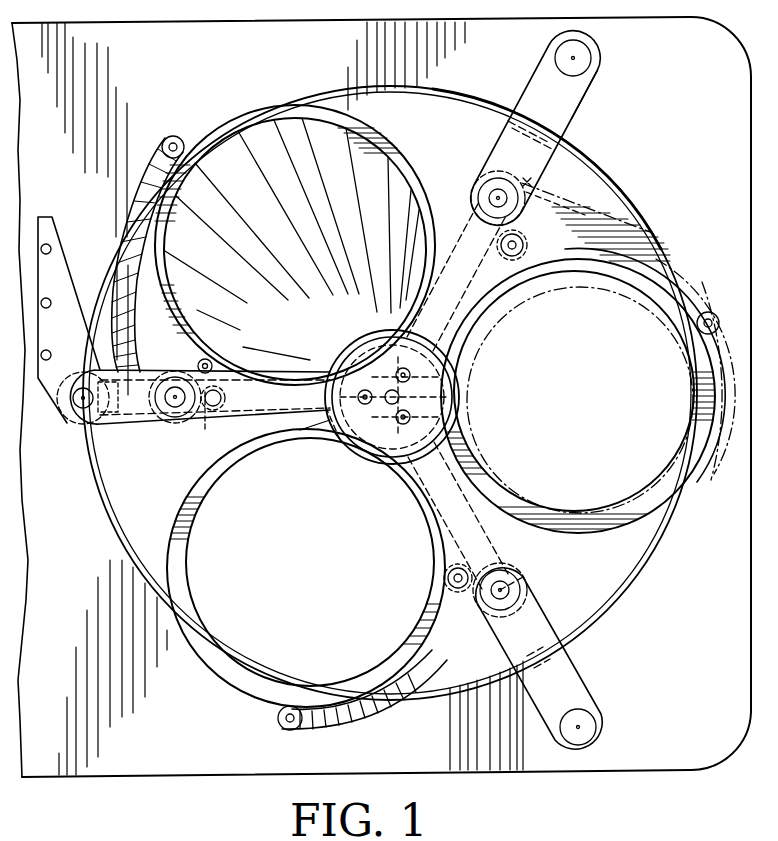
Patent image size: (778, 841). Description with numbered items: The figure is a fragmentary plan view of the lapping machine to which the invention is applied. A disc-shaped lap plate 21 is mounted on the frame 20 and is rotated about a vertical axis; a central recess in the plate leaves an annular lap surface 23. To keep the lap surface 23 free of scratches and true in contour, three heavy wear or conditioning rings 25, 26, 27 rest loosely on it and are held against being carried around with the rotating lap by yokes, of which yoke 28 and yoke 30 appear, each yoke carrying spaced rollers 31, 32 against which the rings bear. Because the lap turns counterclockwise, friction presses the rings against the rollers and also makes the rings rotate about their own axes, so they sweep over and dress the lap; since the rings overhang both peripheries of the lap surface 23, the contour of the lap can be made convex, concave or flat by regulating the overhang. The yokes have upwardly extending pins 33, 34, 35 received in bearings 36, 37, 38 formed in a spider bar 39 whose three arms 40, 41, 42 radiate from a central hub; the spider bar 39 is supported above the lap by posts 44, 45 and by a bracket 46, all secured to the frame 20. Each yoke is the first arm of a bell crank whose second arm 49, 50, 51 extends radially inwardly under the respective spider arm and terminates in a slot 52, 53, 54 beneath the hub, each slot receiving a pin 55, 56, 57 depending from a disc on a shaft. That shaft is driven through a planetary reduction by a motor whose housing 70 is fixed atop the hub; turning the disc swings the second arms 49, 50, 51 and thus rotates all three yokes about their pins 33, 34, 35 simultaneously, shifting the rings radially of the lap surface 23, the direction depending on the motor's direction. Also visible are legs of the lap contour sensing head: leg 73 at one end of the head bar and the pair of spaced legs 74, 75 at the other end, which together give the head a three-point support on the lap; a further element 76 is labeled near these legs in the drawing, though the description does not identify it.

The frame 20 is at (690, 778).
The lap plate 21 is at (651, 555).
The lap surface 23 is at (128, 513).
The ring 25 is at (266, 108).
The ring 26 is at (702, 458).
The ring 27 is at (220, 664).
The yoke 28 is at (158, 188).
The yoke 30 is at (412, 690).
The roller 31 is at (178, 136).
The roller 32 is at (516, 236).
The pin 33 is at (168, 418).
The pin 34 is at (494, 190).
The pin 35 is at (520, 584).
The bearing 36 is at (208, 410).
The bearing 37 is at (545, 184).
The bearing 38 is at (528, 592).
The spider bar 39 is at (604, 123).
The arm 40 is at (100, 430).
The arm 41 is at (535, 98).
The arm 42 is at (578, 680).
The post 44 is at (582, 52).
The post 45 is at (596, 727).
The bracket 46 is at (76, 343).
The second arm 49 is at (272, 440).
The second arm 50 is at (470, 250).
The second arm 51 is at (448, 522).
The slot 52 is at (335, 446).
The slot 53 is at (442, 375).
The slot 54 is at (452, 398).
The pin 55 is at (350, 355).
The pin 56 is at (412, 370).
The pin 57 is at (412, 415).
The motor housing 70 is at (360, 336).
The leg 73 is at (300, 440).
The leg 74 is at (110, 380).
The leg 75 is at (80, 432).
The pin 76 is at (204, 430).